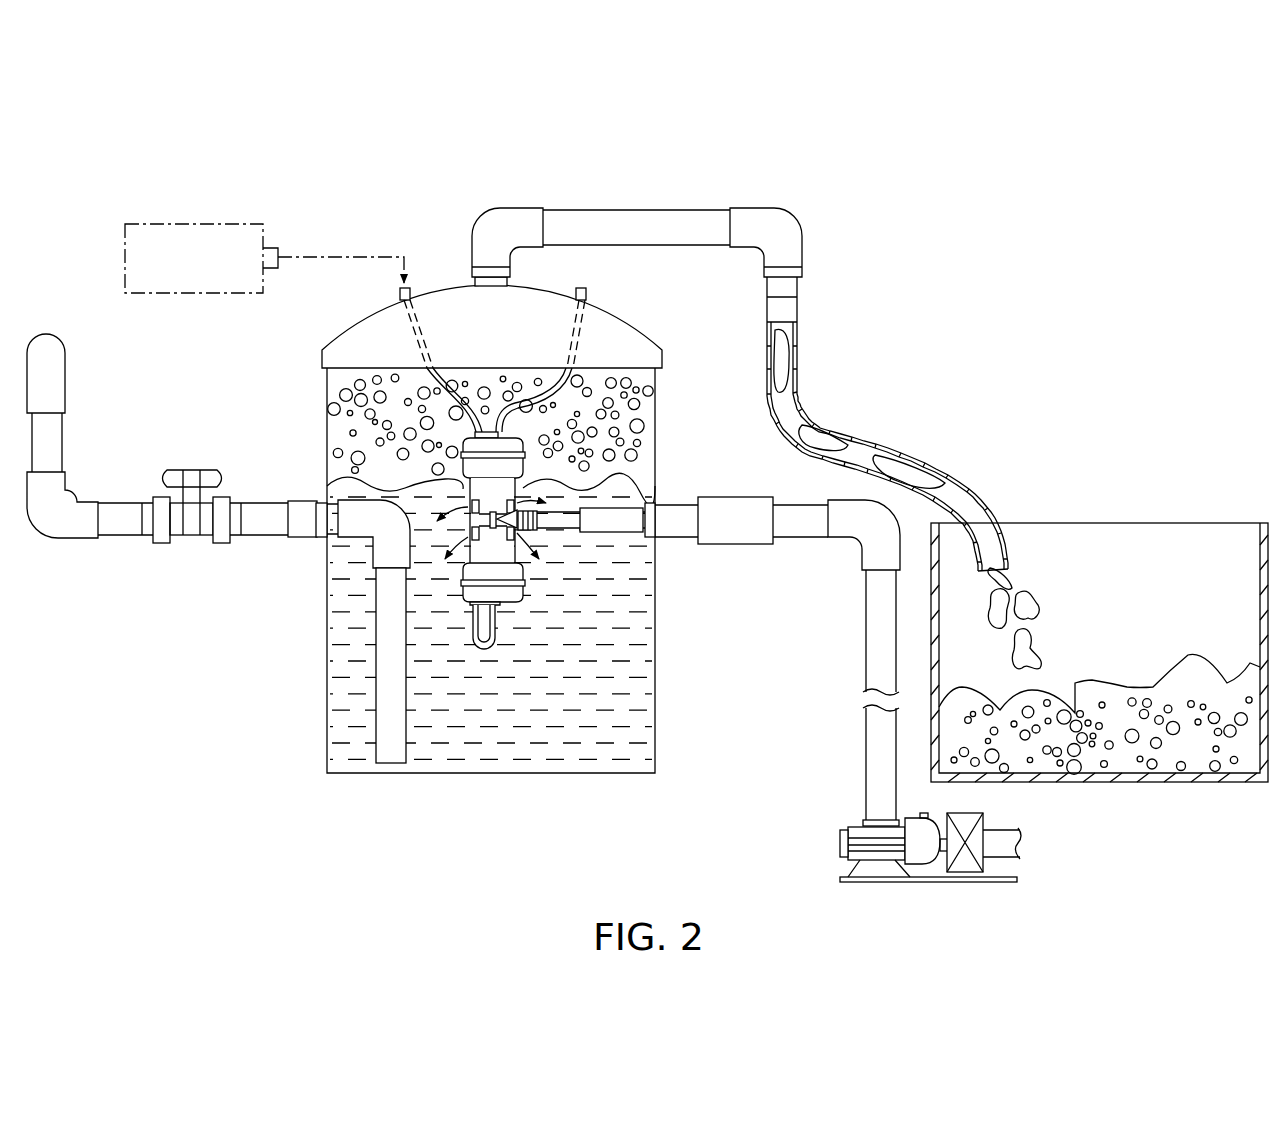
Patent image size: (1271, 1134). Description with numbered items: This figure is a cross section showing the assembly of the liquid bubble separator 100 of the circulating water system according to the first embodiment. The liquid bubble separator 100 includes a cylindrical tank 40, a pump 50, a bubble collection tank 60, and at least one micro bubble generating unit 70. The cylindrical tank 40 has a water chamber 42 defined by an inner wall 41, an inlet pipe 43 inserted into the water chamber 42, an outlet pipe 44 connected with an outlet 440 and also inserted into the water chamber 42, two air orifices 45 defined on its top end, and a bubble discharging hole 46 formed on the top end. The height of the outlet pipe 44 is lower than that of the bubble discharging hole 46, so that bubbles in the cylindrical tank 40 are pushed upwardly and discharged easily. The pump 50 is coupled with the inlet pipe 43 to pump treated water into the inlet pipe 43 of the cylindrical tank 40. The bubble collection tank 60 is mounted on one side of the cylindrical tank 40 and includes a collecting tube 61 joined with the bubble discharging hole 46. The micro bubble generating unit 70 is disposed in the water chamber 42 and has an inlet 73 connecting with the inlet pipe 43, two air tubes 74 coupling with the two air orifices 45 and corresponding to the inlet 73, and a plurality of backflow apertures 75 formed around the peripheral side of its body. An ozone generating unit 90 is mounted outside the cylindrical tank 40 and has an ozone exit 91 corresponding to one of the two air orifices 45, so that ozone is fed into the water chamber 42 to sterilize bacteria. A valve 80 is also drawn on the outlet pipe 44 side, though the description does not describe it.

The liquid bubble separator 100 is at (426, 231).
The ozone generating unit 90 is at (164, 226).
The ozone exit 91 is at (272, 246).
The cylindrical tank 40 is at (532, 584).
The inner wall 41 is at (656, 683).
The water chamber 42 is at (650, 731).
The inlet pipe 43 is at (803, 528).
The outlet pipe 44 is at (77, 538).
The air orifices 45 is at (400, 294).
The bubble discharging hole 46 is at (493, 278).
The outlet 440 is at (300, 538).
The pump 50 is at (838, 840).
The bubble collection tank 60 is at (1151, 522).
The collecting tube 61 is at (692, 230).
The micro bubble generating unit 70 is at (576, 542).
The inlet 73 is at (540, 522).
The air tubes 74 is at (418, 341).
The backflow apertures 75 is at (531, 532).
The valve 80 is at (165, 536).